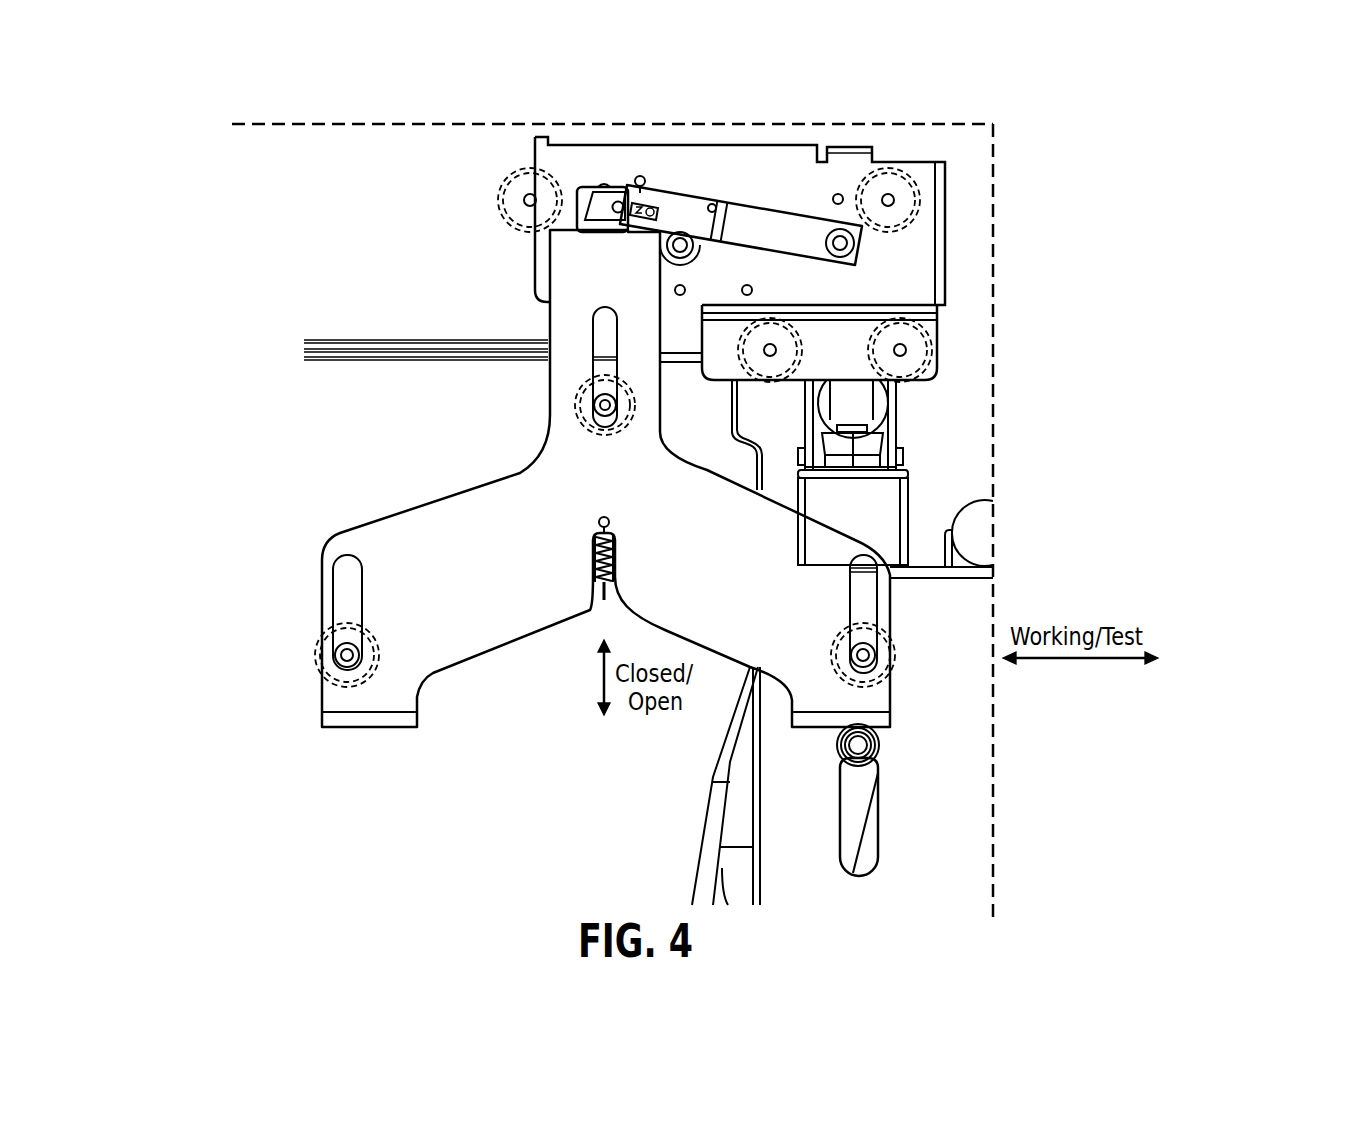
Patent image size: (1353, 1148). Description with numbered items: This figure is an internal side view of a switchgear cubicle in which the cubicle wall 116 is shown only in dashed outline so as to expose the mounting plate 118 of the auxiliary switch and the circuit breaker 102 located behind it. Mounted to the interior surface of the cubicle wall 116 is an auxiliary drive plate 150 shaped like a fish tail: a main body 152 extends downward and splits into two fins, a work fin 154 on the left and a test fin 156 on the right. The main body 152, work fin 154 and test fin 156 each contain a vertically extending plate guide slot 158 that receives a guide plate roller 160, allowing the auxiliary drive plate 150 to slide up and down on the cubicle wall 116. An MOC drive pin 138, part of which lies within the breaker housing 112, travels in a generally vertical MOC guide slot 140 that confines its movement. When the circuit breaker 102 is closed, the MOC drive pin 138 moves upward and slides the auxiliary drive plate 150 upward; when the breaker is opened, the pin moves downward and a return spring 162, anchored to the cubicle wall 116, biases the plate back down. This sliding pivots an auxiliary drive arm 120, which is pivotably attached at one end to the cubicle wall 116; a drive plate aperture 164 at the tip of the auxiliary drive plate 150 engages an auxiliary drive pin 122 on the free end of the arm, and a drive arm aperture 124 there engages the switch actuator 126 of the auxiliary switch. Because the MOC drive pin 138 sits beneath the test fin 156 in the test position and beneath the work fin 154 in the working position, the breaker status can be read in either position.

The circuit breaker 102 is at (1005, 595).
The breaker housing 112 is at (317, 398).
The cubicle wall 116 is at (286, 122).
The mounting plate 118 is at (913, 247).
The auxiliary drive arm 120 is at (803, 230).
The auxiliary drive pin 122 is at (617, 200).
The drive arm aperture 124 is at (640, 194).
The switch actuator 126 is at (652, 208).
The MOC drive pin 138 is at (860, 745).
The MOC guide slot 140 is at (884, 830).
The auxiliary drive plate 150 is at (470, 510).
The main body 152 is at (567, 342).
The work fin 154 is at (337, 697).
The test fin 156 is at (860, 697).
The plate guide slot 158 is at (329, 567).
The guide plate roller 160 is at (337, 657).
The return spring 162 is at (595, 563).
The drive plate aperture 164 is at (583, 178).